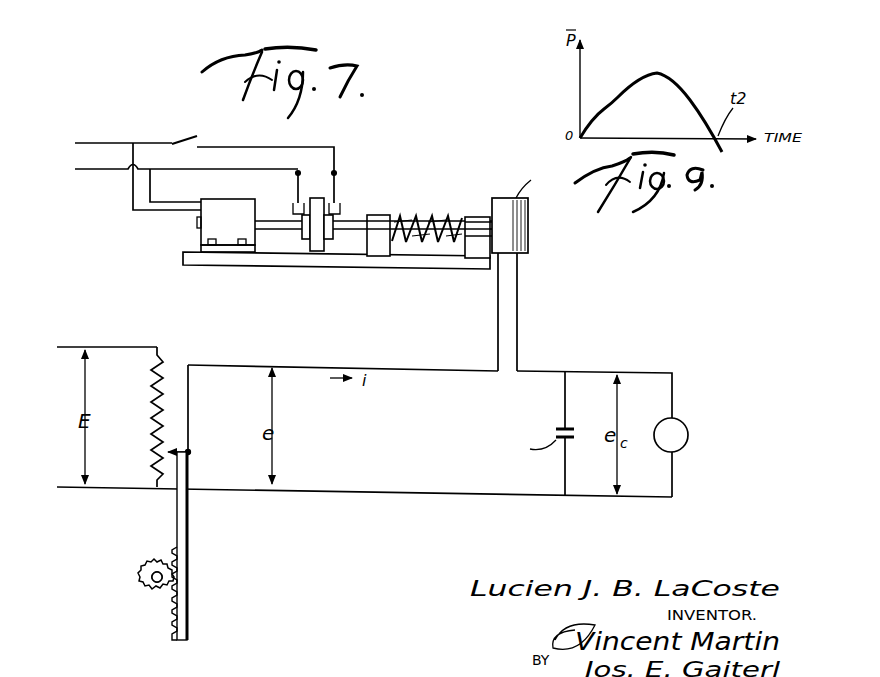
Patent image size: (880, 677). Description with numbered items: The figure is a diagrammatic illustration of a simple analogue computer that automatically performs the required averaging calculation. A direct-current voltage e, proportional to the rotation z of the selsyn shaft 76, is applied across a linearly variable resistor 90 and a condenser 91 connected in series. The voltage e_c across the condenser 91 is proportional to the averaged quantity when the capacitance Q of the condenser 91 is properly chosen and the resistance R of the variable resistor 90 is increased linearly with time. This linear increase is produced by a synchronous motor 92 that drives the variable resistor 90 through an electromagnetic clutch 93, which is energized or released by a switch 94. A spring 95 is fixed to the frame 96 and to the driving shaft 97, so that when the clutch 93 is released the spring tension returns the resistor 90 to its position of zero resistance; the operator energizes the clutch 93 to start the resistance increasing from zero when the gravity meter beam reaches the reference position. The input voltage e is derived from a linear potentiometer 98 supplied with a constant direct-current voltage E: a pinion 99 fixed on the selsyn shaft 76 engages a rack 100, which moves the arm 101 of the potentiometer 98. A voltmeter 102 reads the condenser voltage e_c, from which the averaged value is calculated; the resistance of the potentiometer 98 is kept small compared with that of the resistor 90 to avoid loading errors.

The switch 94 is at (183, 141).
The synchronous motor 92 is at (200, 235).
The electromagnetic clutch 93 is at (321, 198).
The driving shaft 97 is at (401, 218).
The spring 95 is at (439, 216).
The frame 96 is at (477, 217).
The linearly variable resistor 90 is at (528, 233).
The condenser 91 is at (556, 431).
The linear potentiometer 98 is at (154, 420).
The pinion 99 is at (142, 574).
The rack 100 is at (189, 595).
The arm 101 is at (175, 450).
The voltmeter 102 is at (688, 440).
The selsyn shaft 76 is at (153, 581).